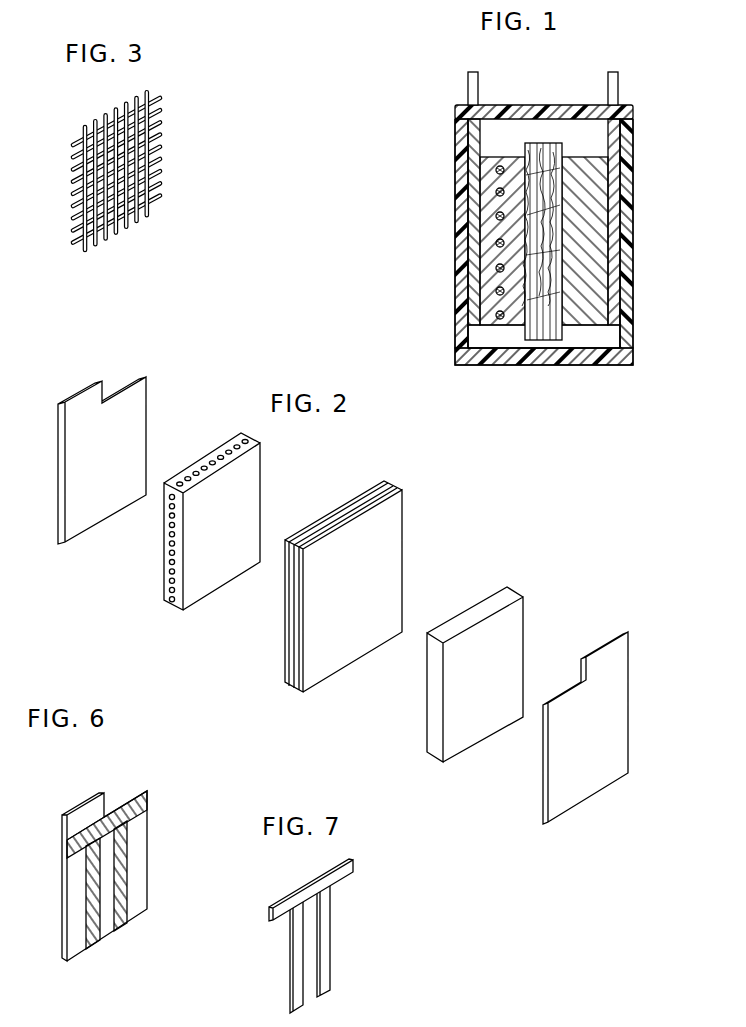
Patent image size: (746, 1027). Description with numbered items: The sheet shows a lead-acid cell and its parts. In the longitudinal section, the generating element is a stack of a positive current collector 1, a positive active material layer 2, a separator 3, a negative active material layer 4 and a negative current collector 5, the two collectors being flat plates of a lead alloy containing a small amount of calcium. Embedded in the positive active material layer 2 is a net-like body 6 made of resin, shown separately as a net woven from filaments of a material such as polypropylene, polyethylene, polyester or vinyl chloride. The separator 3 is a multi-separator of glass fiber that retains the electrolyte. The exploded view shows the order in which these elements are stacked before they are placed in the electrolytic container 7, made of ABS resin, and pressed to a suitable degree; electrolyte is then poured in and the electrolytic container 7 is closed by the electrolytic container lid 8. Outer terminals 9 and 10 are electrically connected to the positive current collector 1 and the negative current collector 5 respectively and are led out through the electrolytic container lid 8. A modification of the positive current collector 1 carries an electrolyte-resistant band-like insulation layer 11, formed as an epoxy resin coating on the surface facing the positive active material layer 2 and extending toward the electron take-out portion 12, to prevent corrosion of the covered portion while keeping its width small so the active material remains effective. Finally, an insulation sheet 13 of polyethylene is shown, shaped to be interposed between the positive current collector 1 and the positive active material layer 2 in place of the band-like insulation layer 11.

In FIG. 1, the positive current collector 1 is at (471, 275).
In FIG. 2, the positive current collector 1 is at (147, 417).
In FIG. 6, the positive current collector 1 is at (73, 937).
In FIG. 1, the positive active material layer 2 is at (486, 317).
In FIG. 2, the positive active material layer 2 is at (262, 488).
In FIG. 1, the separator 3 is at (541, 340).
In FIG. 2, the separator 3 is at (402, 522).
In FIG. 1, the negative active material layer 4 is at (590, 313).
In FIG. 2, the negative active material layer 4 is at (524, 620).
In FIG. 1, the negative current collector 5 is at (615, 273).
In FIG. 2, the negative current collector 5 is at (630, 668).
In FIG. 1, the net-like body 6 is at (497, 218).
In FIG. 3, the net-like body 6 is at (172, 165).
In FIG. 2, the net-like body 6 is at (165, 558).
In FIG. 1, the electrolytic container 7 is at (628, 150).
In FIG. 1, the electrolytic container lid 8 is at (541, 117).
In FIG. 1, the outer terminal 9 is at (468, 80).
In FIG. 1, the outer terminal 10 is at (618, 81).
In FIG. 6, the band-like insulation layer 11 is at (119, 907).
In FIG. 6, the electron take-out portion 12 is at (80, 812).
In FIG. 7, the insulation sheet 13 is at (329, 955).